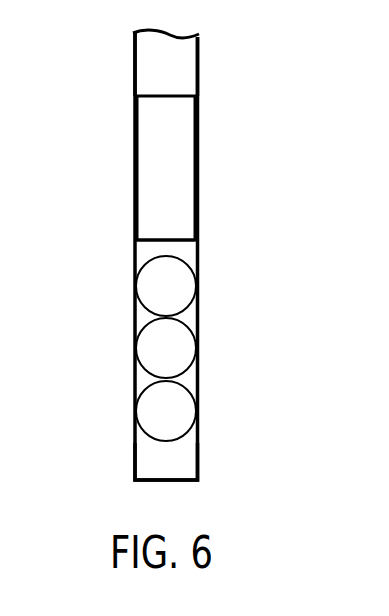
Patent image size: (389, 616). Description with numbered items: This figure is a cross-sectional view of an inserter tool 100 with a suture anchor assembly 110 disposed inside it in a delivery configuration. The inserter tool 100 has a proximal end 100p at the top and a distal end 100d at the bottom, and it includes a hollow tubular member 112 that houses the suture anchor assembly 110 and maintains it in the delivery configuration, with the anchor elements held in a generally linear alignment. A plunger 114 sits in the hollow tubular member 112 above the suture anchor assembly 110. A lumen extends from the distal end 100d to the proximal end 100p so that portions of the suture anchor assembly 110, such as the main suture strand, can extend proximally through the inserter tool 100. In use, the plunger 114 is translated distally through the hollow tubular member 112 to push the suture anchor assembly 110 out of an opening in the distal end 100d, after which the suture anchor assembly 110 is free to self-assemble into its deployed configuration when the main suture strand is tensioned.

The inserter tool 100 is at (108, 125).
The proximal end 100p is at (217, 82).
The distal end 100d is at (212, 463).
The plunger 114 is at (176, 137).
The hollow tubular member 112 is at (188, 251).
The suture anchor assembly 110 is at (150, 350).